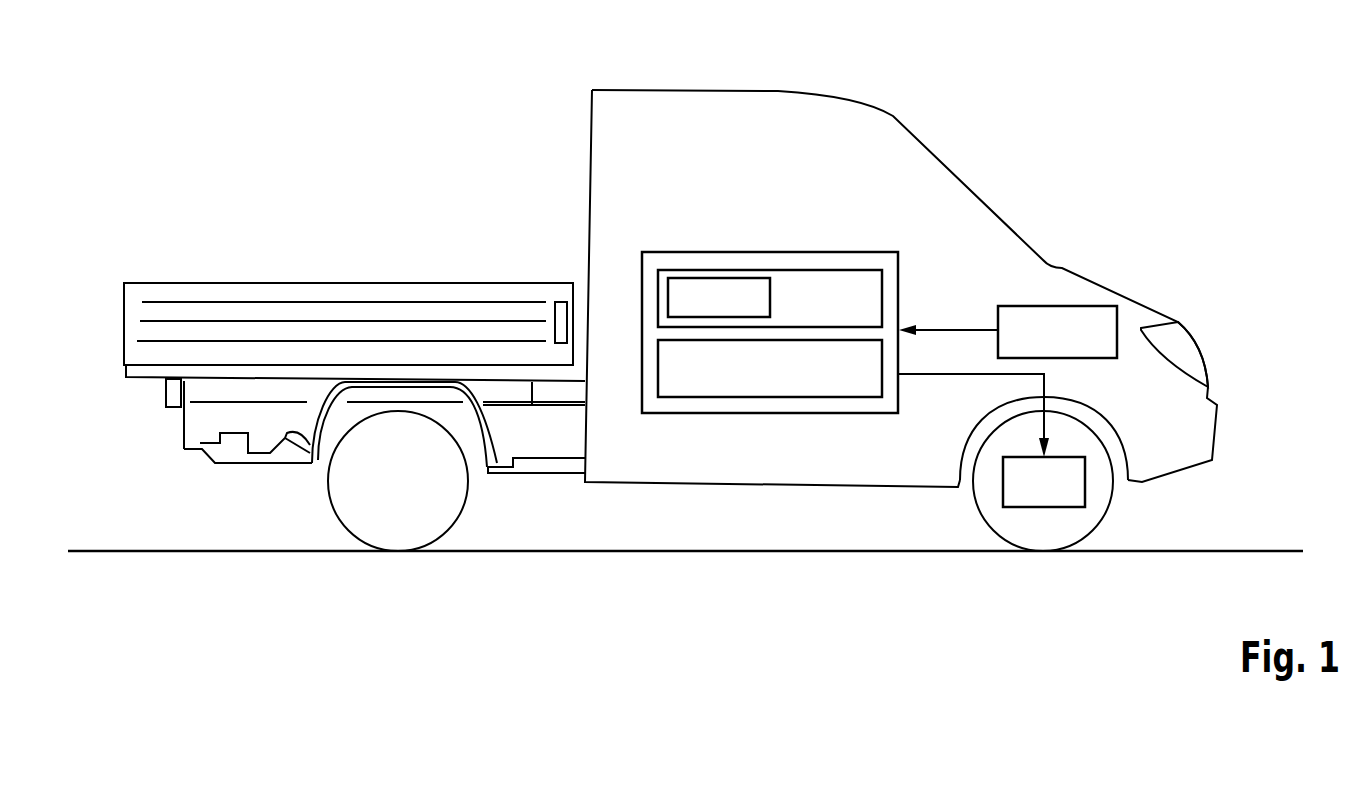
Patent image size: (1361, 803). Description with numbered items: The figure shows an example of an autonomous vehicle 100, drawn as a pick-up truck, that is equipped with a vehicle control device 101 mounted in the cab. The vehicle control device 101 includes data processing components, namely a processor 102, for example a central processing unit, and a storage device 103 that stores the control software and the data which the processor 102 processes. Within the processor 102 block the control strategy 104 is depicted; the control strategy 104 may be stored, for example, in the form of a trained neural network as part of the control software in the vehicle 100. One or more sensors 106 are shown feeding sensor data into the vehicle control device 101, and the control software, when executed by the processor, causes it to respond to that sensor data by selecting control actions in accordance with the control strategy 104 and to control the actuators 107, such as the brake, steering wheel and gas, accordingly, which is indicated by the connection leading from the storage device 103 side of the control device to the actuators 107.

The autonomous vehicle 100 is at (717, 91).
The vehicle control device 101 is at (768, 252).
The processor 102 is at (851, 270).
The storage device 103 is at (793, 383).
The control strategy 104 is at (742, 310).
The sensors 106 is at (1003, 285).
The actuators 107 is at (1068, 497).